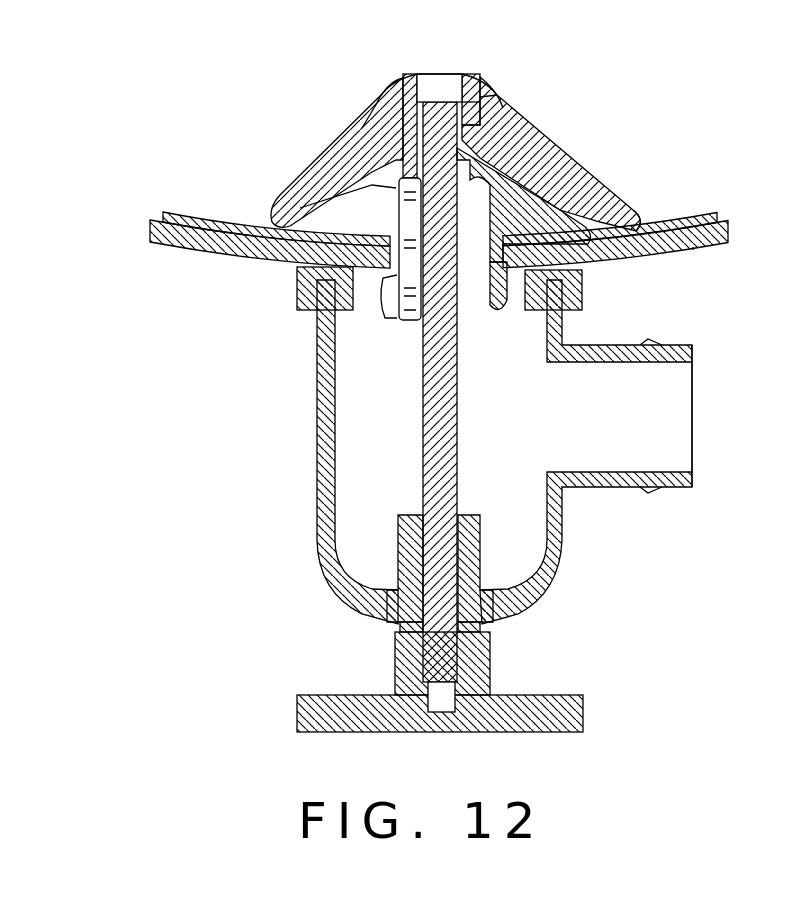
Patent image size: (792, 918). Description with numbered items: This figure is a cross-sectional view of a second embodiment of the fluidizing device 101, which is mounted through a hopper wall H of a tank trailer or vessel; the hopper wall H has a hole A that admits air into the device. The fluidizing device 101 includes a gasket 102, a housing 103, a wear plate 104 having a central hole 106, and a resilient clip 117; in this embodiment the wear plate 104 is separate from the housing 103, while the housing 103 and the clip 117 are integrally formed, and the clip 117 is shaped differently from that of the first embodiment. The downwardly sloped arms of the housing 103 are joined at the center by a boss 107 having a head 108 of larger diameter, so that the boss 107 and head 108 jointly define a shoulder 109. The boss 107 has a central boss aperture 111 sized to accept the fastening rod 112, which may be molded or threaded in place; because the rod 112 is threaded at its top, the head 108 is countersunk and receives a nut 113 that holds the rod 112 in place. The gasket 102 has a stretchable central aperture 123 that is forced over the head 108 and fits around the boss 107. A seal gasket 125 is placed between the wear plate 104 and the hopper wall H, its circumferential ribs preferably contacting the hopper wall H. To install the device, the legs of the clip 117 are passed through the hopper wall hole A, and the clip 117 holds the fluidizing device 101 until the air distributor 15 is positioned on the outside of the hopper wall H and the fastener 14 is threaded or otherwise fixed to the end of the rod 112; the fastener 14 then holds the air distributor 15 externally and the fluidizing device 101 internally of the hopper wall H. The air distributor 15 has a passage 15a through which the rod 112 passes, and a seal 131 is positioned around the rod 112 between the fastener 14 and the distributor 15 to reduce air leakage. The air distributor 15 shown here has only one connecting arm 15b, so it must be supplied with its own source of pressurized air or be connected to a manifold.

The fastener 14 is at (563, 693).
The air distributor 15 is at (317, 488).
The passage 15a is at (460, 585).
The connecting arm 15b is at (676, 487).
The fluidizing device 101 is at (633, 122).
The gasket 102 is at (530, 125).
The housing 103 is at (583, 208).
The wear plate 104 is at (668, 222).
The central hole 106 is at (317, 300).
The boss 107 is at (385, 120).
The head 108 is at (470, 80).
The shoulder 109 is at (488, 103).
The boss aperture 111 is at (490, 178).
The fastening rod 112 is at (459, 450).
The nut 113 is at (428, 100).
The clip 117 is at (397, 318).
The central aperture 123 is at (482, 97).
The seal gasket 125 is at (725, 218).
The seal 131 is at (488, 627).
The hole A is at (482, 300).
The hopper wall H is at (693, 247).